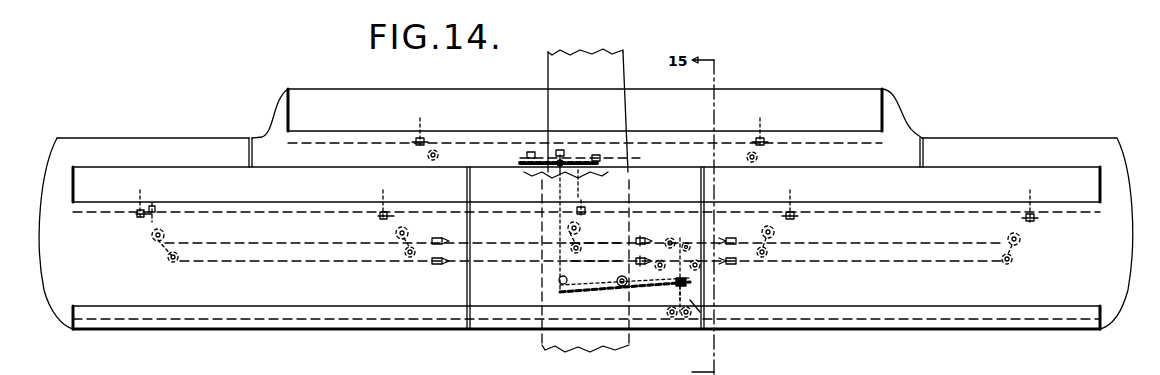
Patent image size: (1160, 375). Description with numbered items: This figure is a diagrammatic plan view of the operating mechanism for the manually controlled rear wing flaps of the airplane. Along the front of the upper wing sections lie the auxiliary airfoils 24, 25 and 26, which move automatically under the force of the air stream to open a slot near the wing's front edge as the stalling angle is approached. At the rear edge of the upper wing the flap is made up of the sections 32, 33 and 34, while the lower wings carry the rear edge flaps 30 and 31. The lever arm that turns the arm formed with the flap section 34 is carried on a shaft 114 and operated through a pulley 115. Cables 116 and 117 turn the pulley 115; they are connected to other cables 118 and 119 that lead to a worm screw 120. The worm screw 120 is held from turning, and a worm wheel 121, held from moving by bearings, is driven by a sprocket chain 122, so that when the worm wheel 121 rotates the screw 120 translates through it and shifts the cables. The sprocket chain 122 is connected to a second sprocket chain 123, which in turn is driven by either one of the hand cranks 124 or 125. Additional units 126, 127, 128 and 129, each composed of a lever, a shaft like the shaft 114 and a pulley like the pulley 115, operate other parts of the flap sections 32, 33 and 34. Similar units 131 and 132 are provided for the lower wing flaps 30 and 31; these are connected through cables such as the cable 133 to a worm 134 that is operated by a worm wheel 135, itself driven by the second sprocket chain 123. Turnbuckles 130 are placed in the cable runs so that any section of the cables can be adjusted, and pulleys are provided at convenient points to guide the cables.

The auxiliary airfoil 24 is at (890, 325).
The auxiliary airfoil 25 is at (522, 325).
The auxiliary airfoil 26 is at (415, 322).
The rear edge flap 30 is at (815, 105).
The rear edge flap 31 is at (350, 102).
The flap section 32 is at (948, 177).
The flap section 33 is at (493, 180).
The flap section 34 is at (113, 175).
The shaft 114 is at (148, 192).
The pulley 115 is at (168, 192).
The cable 116 is at (220, 263).
The cable 117 is at (247, 245).
The cable 118 is at (483, 263).
The cable 119 is at (478, 242).
The worm screw 120 is at (702, 302).
The worm wheel 121 is at (666, 292).
The sprocket chain 122 is at (650, 285).
The second sprocket chain 123 is at (558, 232).
The hand crank 124 is at (560, 295).
The hand crank 125 is at (548, 192).
The operating unit 126 is at (383, 222).
The operating unit 127 is at (590, 220).
The operating unit 128 is at (788, 208).
The operating unit 129 is at (1026, 208).
The turnbuckle 130 is at (430, 236).
The operating unit 131 is at (422, 126).
The operating unit 132 is at (760, 126).
The cable 133 is at (647, 160).
The worm 134 is at (550, 160).
The worm wheel 135 is at (566, 162).